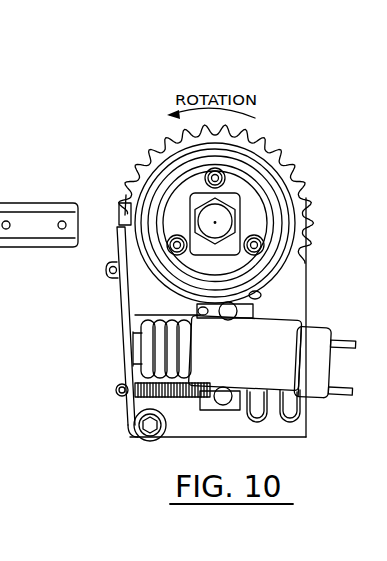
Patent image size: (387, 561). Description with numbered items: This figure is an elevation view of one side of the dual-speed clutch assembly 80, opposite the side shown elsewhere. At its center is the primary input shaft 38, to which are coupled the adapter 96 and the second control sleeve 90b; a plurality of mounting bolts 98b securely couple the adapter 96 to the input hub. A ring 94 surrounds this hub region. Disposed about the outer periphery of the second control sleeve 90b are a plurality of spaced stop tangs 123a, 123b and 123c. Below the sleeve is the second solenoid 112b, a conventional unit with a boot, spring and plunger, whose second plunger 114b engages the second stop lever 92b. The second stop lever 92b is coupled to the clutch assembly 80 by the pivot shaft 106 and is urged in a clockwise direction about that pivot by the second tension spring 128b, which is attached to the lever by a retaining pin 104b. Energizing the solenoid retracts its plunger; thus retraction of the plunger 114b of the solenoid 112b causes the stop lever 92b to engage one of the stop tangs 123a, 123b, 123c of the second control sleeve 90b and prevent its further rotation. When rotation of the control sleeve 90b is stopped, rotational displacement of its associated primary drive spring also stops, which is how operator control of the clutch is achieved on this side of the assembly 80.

The dual-speed clutch assembly 80 is at (143, 126).
The stop tang 123a is at (256, 140).
The sprocket ring 94 is at (266, 168).
The adapter 96 is at (272, 174).
The primary input shaft 38 is at (220, 217).
The mounting bolts 98b is at (258, 247).
The second control sleeve 90b is at (284, 279).
The stop tang 123b is at (258, 296).
The stop tang 123c is at (122, 203).
The second stop lever 92b is at (124, 302).
The second plunger 114b is at (133, 340).
The second solenoid 112b is at (255, 364).
The second tension spring 128b is at (172, 403).
The retaining pin 104b is at (117, 394).
The pivot shaft 106 is at (150, 425).